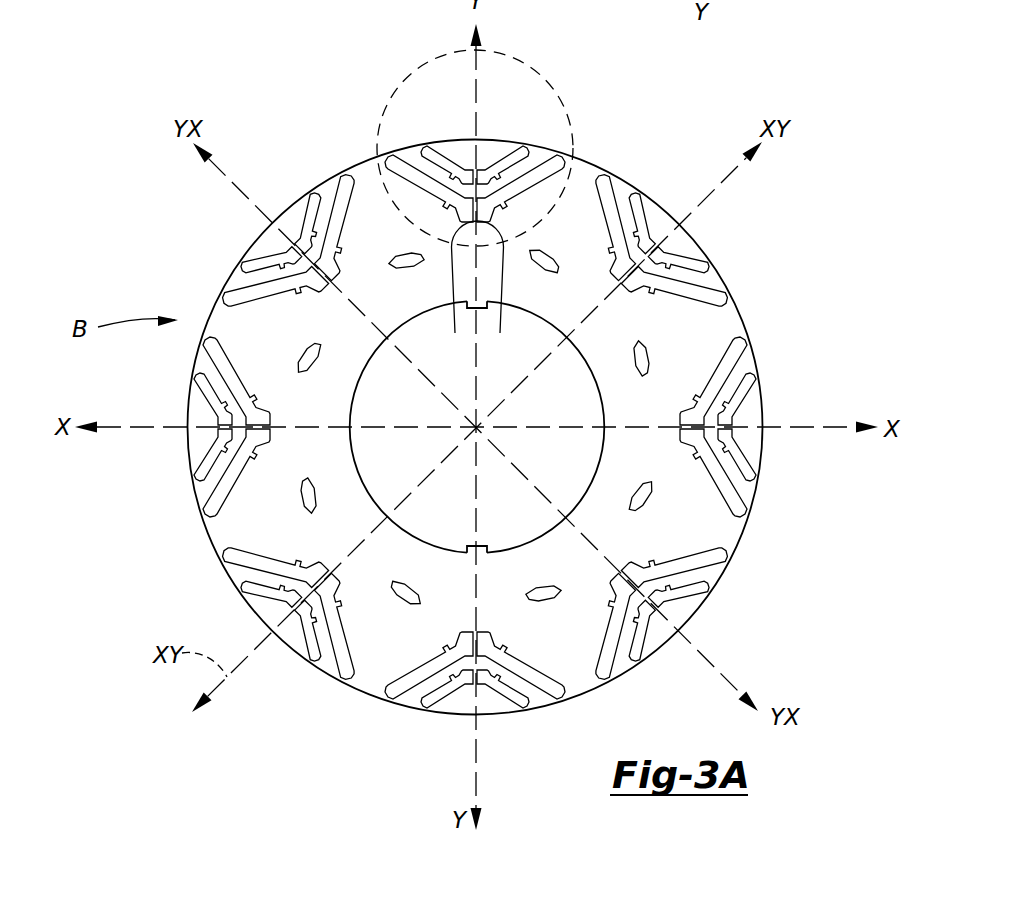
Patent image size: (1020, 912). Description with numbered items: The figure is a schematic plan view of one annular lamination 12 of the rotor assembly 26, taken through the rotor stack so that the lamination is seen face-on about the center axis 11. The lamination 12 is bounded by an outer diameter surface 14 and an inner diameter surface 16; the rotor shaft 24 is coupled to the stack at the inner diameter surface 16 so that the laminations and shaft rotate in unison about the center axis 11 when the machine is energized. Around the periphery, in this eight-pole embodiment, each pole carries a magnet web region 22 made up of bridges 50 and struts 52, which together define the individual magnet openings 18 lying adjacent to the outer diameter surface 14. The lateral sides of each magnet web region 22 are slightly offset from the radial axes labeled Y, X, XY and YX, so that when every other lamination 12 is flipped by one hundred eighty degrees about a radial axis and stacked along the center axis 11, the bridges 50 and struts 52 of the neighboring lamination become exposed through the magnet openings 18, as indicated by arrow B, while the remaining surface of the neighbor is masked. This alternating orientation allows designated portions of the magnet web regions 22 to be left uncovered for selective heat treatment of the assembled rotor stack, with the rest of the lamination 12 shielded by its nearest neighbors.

The center axis 11 is at (452, 421).
The lamination 12 is at (375, 652).
The outer diameter surface 14 is at (743, 317).
The inner diameter surface 16 is at (590, 478).
The magnet openings 18 is at (335, 205).
The magnet web region 22 is at (545, 67).
The rotor shaft 24 is at (463, 509).
The rotor assembly 26 is at (758, 220).
The bridges 50 is at (383, 145).
The struts 52 is at (498, 333).